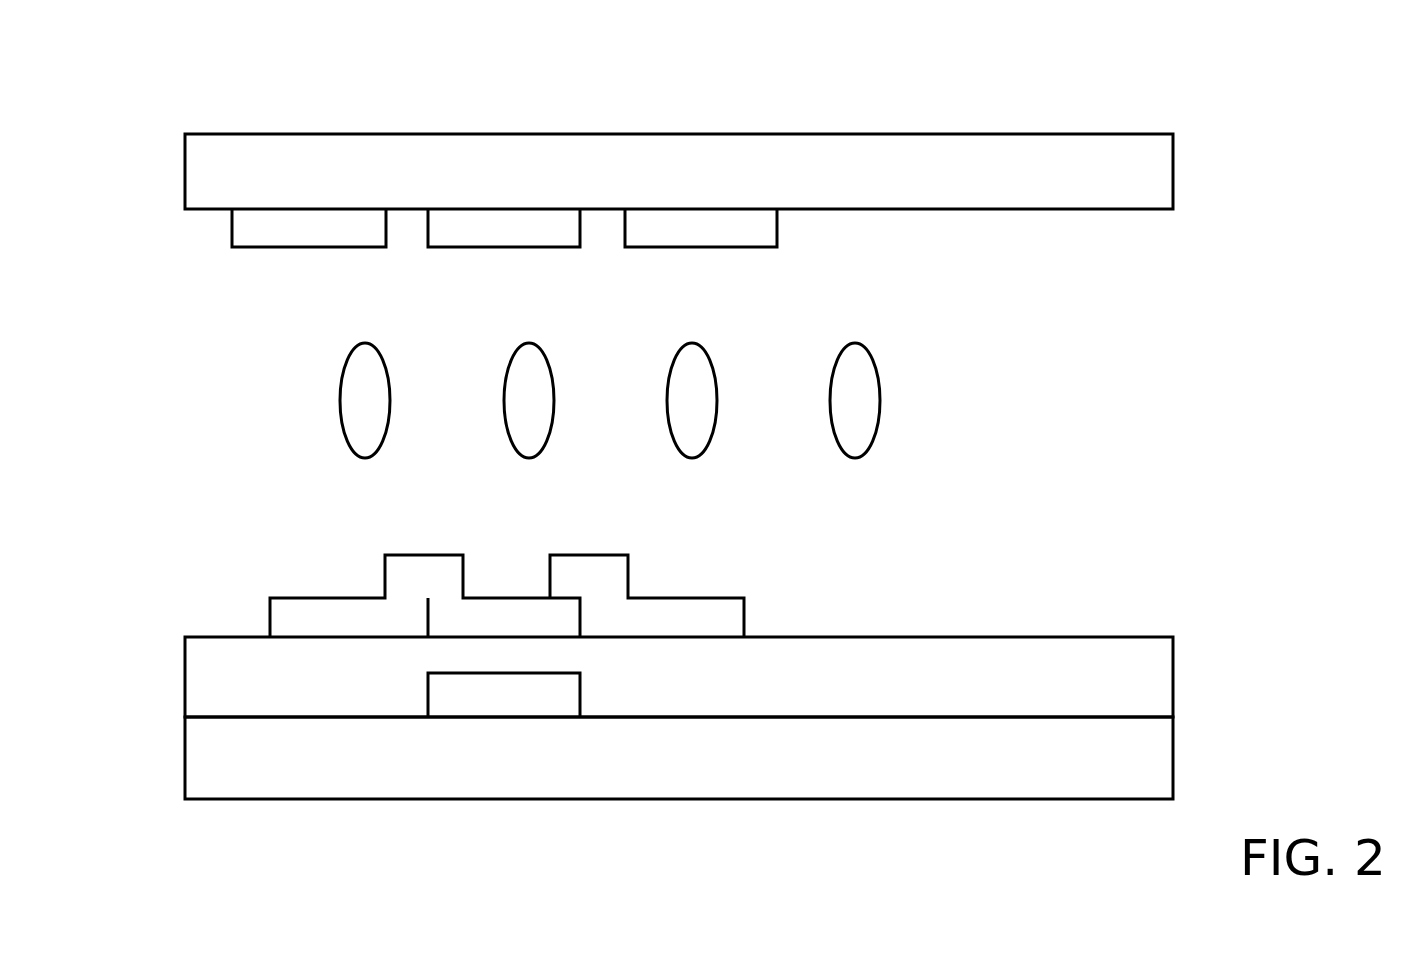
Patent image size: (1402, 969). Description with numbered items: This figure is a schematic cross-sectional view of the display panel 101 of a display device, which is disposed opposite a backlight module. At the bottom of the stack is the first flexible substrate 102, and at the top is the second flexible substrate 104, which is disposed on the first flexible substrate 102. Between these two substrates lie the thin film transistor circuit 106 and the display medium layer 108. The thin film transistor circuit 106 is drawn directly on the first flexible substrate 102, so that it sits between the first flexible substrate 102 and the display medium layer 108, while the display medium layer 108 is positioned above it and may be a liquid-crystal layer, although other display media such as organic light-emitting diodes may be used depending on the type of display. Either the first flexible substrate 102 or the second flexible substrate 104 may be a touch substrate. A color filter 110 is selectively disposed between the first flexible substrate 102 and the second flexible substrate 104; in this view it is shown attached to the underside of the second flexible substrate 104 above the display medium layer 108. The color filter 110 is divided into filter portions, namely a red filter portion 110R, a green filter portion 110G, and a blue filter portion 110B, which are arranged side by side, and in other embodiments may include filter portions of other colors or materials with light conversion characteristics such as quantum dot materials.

The display panel 101 is at (68, 57).
The first flexible substrate 102 is at (230, 757).
The second flexible substrate 104 is at (232, 171).
The thin film transistor circuit 106 is at (184, 555).
The display medium layer 108 is at (273, 400).
The color filter 110 is at (432, 264).
The red filter portion 110R is at (309, 232).
The green filter portion 110G is at (504, 232).
The blue filter portion 110B is at (699, 232).